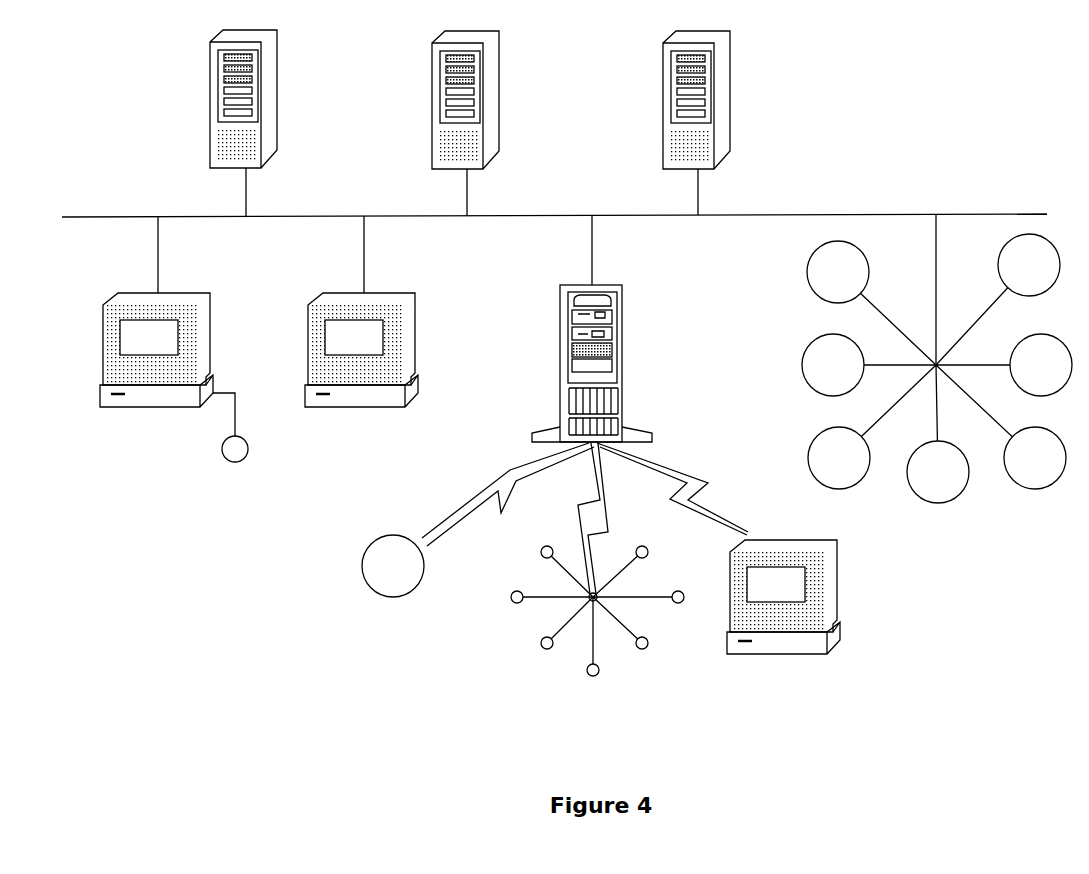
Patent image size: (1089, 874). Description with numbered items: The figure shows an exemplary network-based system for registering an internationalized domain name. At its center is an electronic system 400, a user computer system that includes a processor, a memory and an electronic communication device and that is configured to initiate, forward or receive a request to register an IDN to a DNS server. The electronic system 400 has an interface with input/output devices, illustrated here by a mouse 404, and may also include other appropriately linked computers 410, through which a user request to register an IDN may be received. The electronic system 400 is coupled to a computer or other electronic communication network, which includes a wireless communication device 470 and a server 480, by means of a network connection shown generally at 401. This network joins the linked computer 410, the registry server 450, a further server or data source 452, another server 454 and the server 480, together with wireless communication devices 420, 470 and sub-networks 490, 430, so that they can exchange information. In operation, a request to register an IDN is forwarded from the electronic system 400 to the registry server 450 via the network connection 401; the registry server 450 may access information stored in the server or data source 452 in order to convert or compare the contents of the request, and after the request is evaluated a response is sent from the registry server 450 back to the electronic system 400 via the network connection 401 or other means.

The electronic system 400 is at (156, 326).
The network connection 401 is at (554, 196).
The mouse 404 is at (234, 444).
The appropriately linked computer 410 is at (361, 326).
The wireless communication device 420 is at (478, 530).
The sub-network 430 is at (937, 386).
The registry server 450 is at (272, 123).
The server or data source 452 is at (501, 123).
The server 454 is at (734, 123).
The wireless communication device 470 is at (718, 574).
The server 480 is at (611, 328).
The sub-network 490 is at (597, 583).